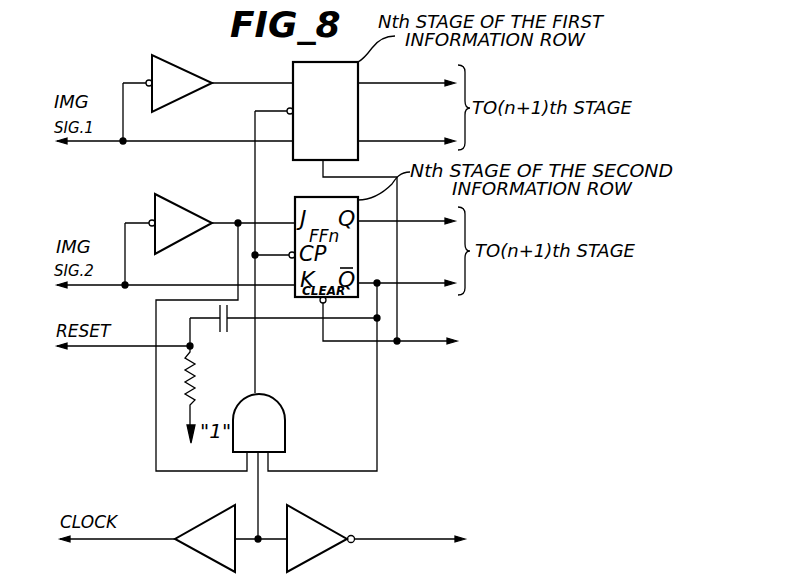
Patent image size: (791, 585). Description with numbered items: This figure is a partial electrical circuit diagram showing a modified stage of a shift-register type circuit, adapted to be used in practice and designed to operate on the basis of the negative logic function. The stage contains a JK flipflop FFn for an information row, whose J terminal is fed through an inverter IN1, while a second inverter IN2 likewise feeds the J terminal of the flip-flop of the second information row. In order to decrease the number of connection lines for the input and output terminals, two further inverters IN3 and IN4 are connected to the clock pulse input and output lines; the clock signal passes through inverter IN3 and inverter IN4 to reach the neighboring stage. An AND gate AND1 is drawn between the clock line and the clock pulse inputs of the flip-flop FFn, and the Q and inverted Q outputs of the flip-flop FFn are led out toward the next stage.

The inverter IN1 is at (179, 83).
The inverter IN2 is at (180, 224).
The inverter IN3 is at (205, 538).
The inverter IN4 is at (321, 538).
The AND gate AND1 is at (259, 423).
The JK flipflop FFn is at (352, 130).